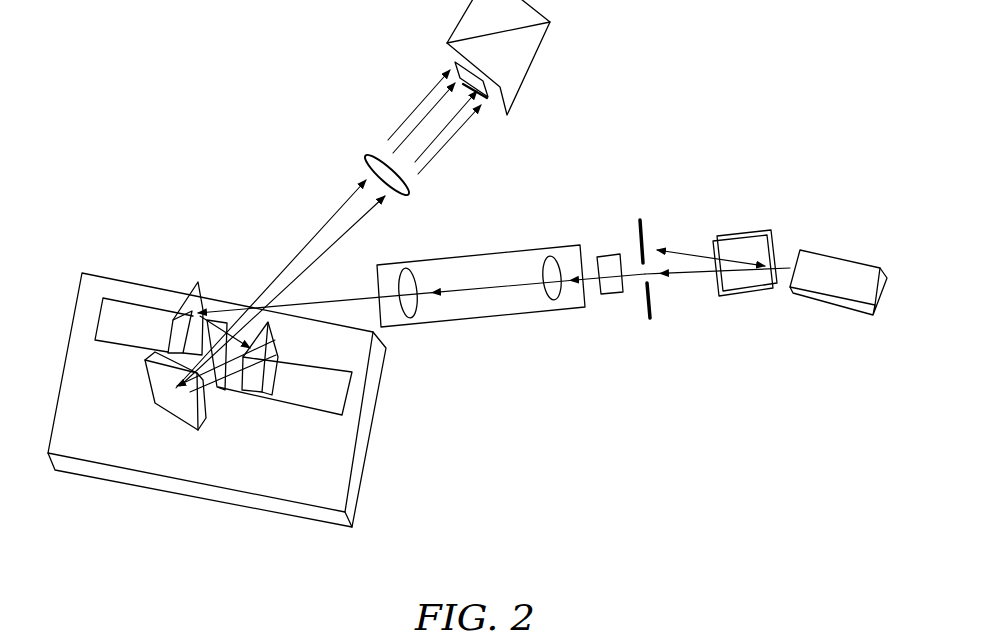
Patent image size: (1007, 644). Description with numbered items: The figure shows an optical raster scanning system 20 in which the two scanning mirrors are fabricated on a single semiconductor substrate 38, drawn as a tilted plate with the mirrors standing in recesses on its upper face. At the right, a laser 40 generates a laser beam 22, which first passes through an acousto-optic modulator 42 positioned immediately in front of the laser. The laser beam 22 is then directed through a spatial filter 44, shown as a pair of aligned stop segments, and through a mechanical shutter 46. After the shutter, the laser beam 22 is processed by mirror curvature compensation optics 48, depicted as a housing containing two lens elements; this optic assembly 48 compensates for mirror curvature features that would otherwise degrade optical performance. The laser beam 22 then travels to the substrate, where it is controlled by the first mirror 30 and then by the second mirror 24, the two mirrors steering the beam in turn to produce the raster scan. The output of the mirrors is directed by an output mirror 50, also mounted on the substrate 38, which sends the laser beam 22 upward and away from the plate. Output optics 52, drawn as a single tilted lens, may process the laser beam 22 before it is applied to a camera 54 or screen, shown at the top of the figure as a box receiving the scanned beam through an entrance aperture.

The optical raster scanning system 20 is at (201, 181).
The laser beam 22 is at (786, 263).
The second mirror 24 is at (273, 355).
The first mirror 30 is at (200, 295).
The semiconductor substrate 38 is at (362, 440).
The laser 40 is at (847, 272).
The acousto-optic modulator 42 is at (751, 275).
The spatial filter 44 is at (645, 223).
The mechanical shutter 46 is at (613, 295).
The mirror curvature compensation optics 48 is at (487, 263).
The output mirror 50 is at (173, 403).
The output optics 52 is at (367, 153).
The camera 54 is at (538, 60).